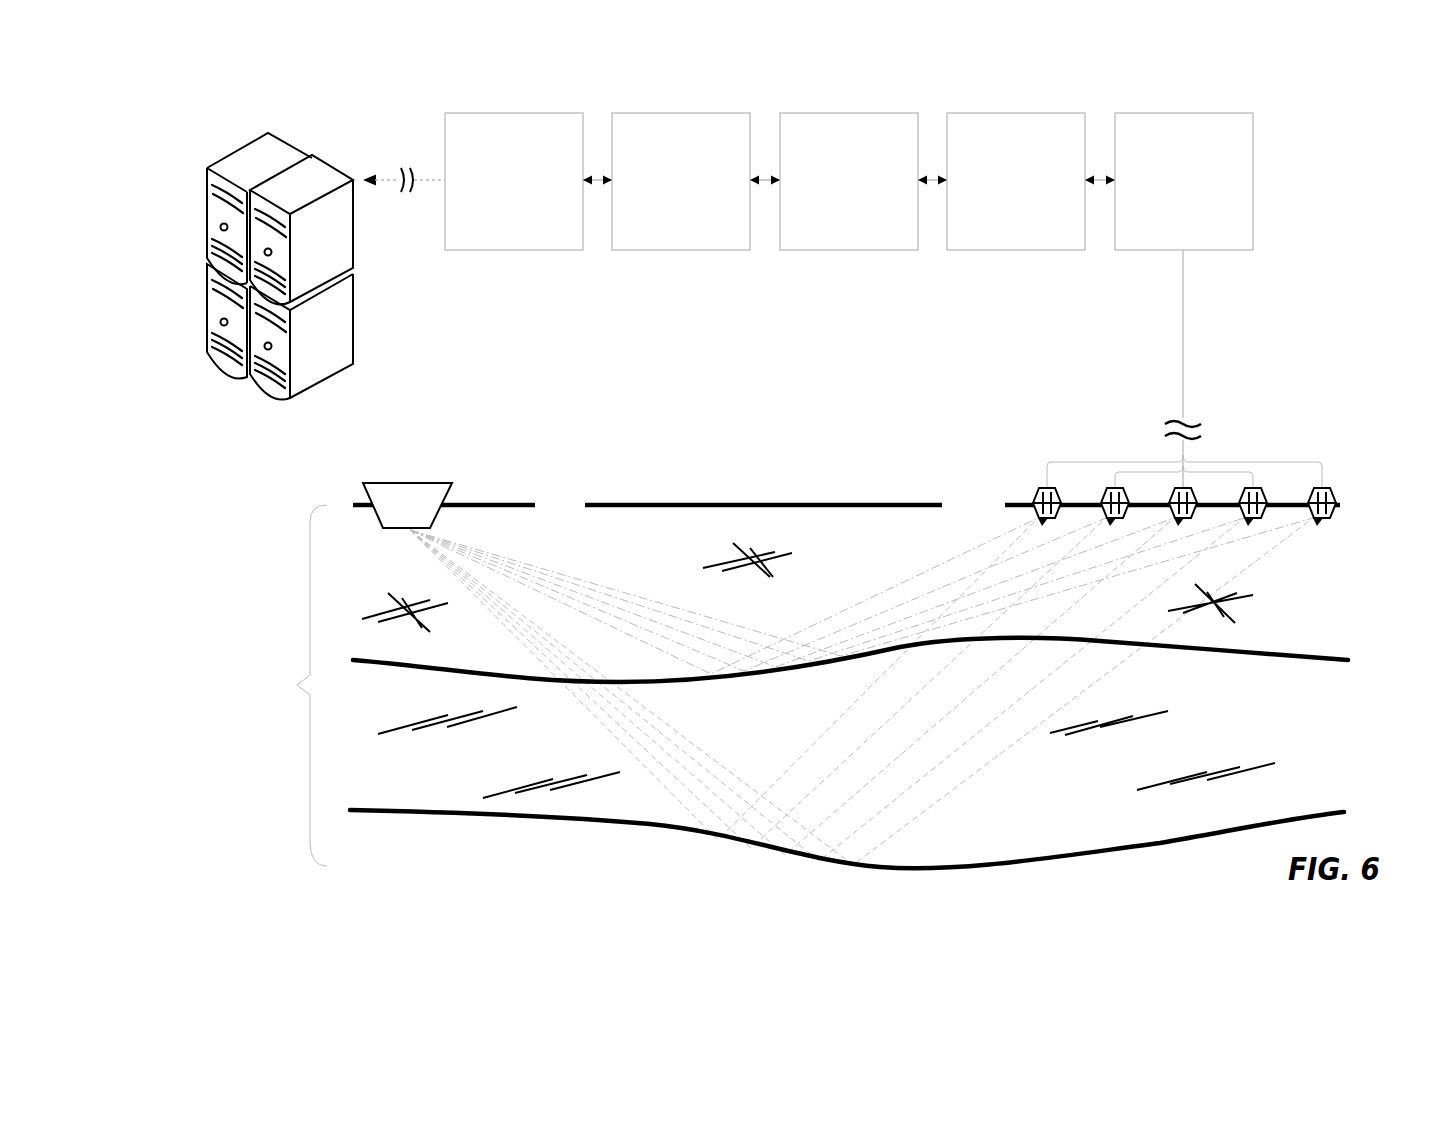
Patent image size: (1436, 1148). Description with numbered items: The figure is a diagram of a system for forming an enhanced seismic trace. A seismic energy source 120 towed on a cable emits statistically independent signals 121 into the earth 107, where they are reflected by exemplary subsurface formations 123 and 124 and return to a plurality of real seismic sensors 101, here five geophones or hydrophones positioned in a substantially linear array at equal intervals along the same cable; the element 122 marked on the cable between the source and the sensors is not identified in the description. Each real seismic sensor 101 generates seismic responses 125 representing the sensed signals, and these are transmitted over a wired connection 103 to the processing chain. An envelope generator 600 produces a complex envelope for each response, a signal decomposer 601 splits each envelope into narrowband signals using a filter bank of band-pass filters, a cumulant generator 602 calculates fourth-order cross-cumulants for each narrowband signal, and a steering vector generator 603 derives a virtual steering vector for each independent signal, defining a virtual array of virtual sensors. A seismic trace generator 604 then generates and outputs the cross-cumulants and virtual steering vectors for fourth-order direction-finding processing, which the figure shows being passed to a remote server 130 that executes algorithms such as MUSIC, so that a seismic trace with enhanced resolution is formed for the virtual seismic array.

The envelope generator 600 is at (1184, 300).
The signal decomposer 601 is at (1016, 181).
The cumulant generator 602 is at (849, 181).
The steering vector generator 603 is at (681, 181).
The seismic trace generator 604 is at (514, 181).
The remote server 130 is at (248, 393).
The wired connection 103 is at (1184, 428).
The seismic responses 125 is at (1244, 433).
The real seismic sensors 101 is at (1143, 506).
The cable section 122 is at (647, 505).
The seismic energy source 120 is at (407, 505).
The statistically independent signals 121 is at (487, 530).
The earth 107 is at (289, 685).
The subsurface formation 123 is at (850, 660).
The subsurface formation 124 is at (847, 834).